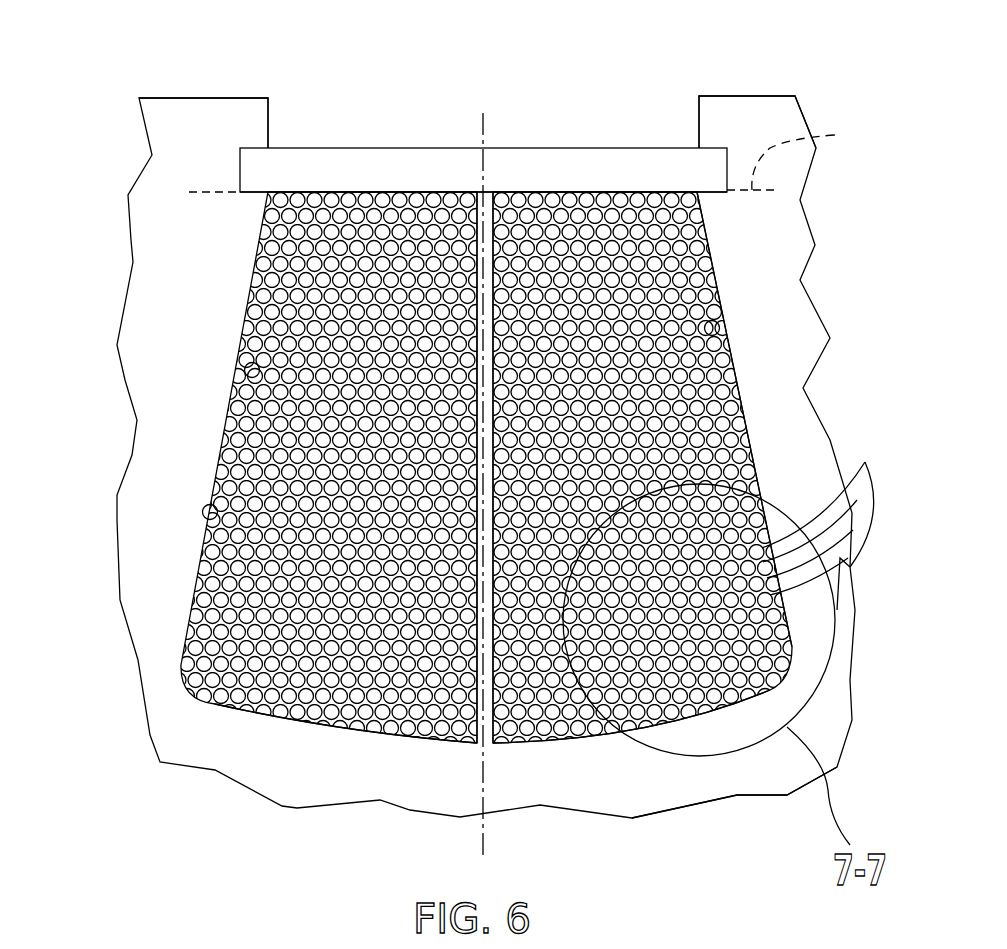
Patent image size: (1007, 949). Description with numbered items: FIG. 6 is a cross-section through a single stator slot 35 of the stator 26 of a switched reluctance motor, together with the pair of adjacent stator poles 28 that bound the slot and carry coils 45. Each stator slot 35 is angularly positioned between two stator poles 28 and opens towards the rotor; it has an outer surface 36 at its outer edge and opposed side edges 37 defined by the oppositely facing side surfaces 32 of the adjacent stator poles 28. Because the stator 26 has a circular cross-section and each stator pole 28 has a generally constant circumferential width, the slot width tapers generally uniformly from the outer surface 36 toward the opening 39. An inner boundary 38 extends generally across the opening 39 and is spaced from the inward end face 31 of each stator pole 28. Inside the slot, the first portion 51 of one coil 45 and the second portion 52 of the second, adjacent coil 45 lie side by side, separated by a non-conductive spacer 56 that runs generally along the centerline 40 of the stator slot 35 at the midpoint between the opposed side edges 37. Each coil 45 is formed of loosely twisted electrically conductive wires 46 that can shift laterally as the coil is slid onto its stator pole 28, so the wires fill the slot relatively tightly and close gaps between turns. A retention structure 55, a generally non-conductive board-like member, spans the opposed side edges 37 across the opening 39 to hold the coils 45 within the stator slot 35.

The stator 26 is at (660, 767).
The stator pole 28 is at (157, 352).
The inward end face 31 is at (202, 97).
The side surface 32 is at (246, 370).
The stator slot 35 is at (316, 744).
The outer surface 36 is at (598, 738).
The side edge 37 is at (760, 487).
The inner boundary 38 is at (808, 155).
The opening 39 is at (483, 116).
The centerline 40 is at (483, 127).
The coil 45 is at (476, 465).
The electrically conductive wire 46 is at (819, 521).
The first portion 51 is at (768, 437).
The second portion 52 is at (218, 350).
The retention structure 55 is at (428, 170).
The non-conductive spacer 56 is at (490, 745).